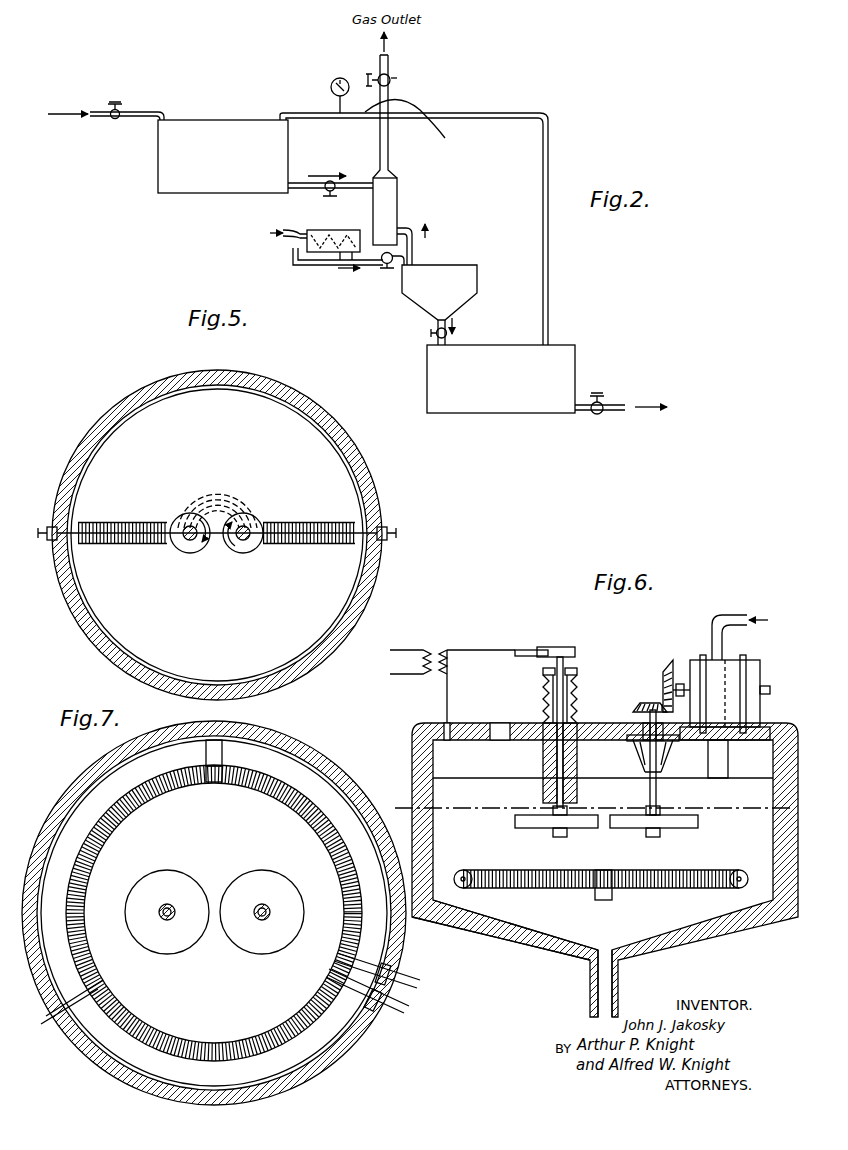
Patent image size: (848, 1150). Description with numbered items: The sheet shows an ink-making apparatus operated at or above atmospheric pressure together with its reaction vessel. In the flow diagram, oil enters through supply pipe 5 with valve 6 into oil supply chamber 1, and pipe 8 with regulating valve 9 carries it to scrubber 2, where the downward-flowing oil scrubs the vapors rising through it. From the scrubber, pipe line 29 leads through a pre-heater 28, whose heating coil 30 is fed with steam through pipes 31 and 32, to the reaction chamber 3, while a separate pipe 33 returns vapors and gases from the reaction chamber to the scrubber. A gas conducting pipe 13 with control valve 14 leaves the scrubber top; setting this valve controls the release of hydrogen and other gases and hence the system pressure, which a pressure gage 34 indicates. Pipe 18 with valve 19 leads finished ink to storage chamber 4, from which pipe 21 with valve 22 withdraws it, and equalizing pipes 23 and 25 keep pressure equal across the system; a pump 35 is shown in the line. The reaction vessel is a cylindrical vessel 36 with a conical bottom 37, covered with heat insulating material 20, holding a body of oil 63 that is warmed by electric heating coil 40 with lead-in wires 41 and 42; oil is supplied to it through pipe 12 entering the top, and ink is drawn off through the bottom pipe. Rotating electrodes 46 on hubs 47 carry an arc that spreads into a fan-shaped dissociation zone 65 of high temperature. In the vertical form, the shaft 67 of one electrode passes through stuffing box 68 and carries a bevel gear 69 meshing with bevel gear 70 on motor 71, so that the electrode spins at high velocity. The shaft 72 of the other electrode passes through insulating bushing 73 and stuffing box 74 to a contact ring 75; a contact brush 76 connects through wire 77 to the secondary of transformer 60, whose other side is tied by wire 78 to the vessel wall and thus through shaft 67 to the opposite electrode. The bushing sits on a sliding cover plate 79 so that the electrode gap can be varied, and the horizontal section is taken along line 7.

In FIG. 2, the oil supply chamber 1 is at (273, 175).
In FIG. 2, the scrubber 2 is at (401, 226).
In FIG. 2, the reaction chamber 3 is at (477, 268).
In FIG. 2, the storage chamber 4 is at (560, 390).
In FIG. 2, the supply pipe 5 is at (136, 118).
In FIG. 2, the valve 6 is at (120, 106).
In FIG. 6, the section line 7 is at (590, 807).
In FIG. 2, the pipe 8 is at (351, 190).
In FIG. 2, the regulating valve 9 is at (326, 192).
In FIG. 6, the pipe 12 is at (712, 633).
In FIG. 2, the gas conducting pipe 13 is at (389, 148).
In FIG. 2, the control valve 14 is at (375, 74).
In FIG. 2, the pipe 18 is at (437, 333).
In FIG. 6, the pipe 18 is at (613, 990).
In FIG. 2, the valve 19 is at (447, 335).
In FIG. 5, the heat insulating material 20 is at (338, 425).
In FIG. 7, the heat insulating material 20 is at (82, 770).
In FIG. 6, the heat insulating material 20 is at (412, 746).
In FIG. 2, the pipe 21 is at (621, 414).
In FIG. 2, the valve 22 is at (595, 416).
In FIG. 2, the equalizing pipe 23 is at (333, 119).
In FIG. 2, the equalizing pipe 25 is at (550, 170).
In FIG. 2, the pre-heater 28 is at (324, 230).
In FIG. 2, the pipe line 29 is at (318, 265).
In FIG. 2, the heating coil 30 is at (343, 236).
In FIG. 2, the pipe 31 is at (282, 230).
In FIG. 2, the pipe 32 is at (356, 266).
In FIG. 2, the pipe 33 is at (414, 248).
In FIG. 2, the pressure gage 34 is at (330, 85).
In FIG. 2, the pump 35 is at (388, 276).
In FIG. 5, the cylindrical vessel 36 is at (104, 436).
In FIG. 7, the cylindrical vessel 36 is at (62, 800).
In FIG. 6, the cylindrical vessel 36 is at (433, 788).
In FIG. 6, the conical bottom 37 is at (522, 948).
In FIG. 5, the electric heating coil 40 is at (328, 544).
In FIG. 7, the electric heating coil 40 is at (157, 782).
In FIG. 6, the electric heating coil 40 is at (700, 870).
In FIG. 5, the lead-in wire 41 is at (43, 546).
In FIG. 5, the lead-in wire 42 is at (392, 546).
In FIG. 5, the electrodes 46 is at (235, 549).
In FIG. 7, the electrodes 46 is at (256, 897).
In FIG. 6, the electrodes 46 is at (588, 830).
In FIG. 5, the roller hub 47 is at (251, 530).
In FIG. 6, the transformer 60 is at (430, 645).
In FIG. 7, the body of oil 63 is at (268, 904).
In FIG. 6, the body of oil 63 is at (730, 792).
In FIG. 5, the dissociation zone 65 is at (240, 506).
In FIG. 6, the shaft 67 is at (662, 770).
In FIG. 6, the stuffing box 68 is at (643, 762).
In FIG. 6, the bevel gear 69 is at (648, 700).
In FIG. 6, the bevel gear 70 is at (668, 672).
In FIG. 6, the motor 71 is at (748, 680).
In FIG. 7, the shaft 72 is at (162, 904).
In FIG. 6, the shaft 72 is at (556, 757).
In FIG. 6, the insulating bushing 73 is at (545, 703).
In FIG. 6, the stuffing box 74 is at (543, 679).
In FIG. 6, the contact ring 75 is at (565, 645).
In FIG. 6, the contact brush 76 is at (528, 648).
In FIG. 6, the wire 77 is at (468, 648).
In FIG. 6, the wire 78 is at (448, 706).
In FIG. 6, the sliding cover plate 79 is at (588, 735).